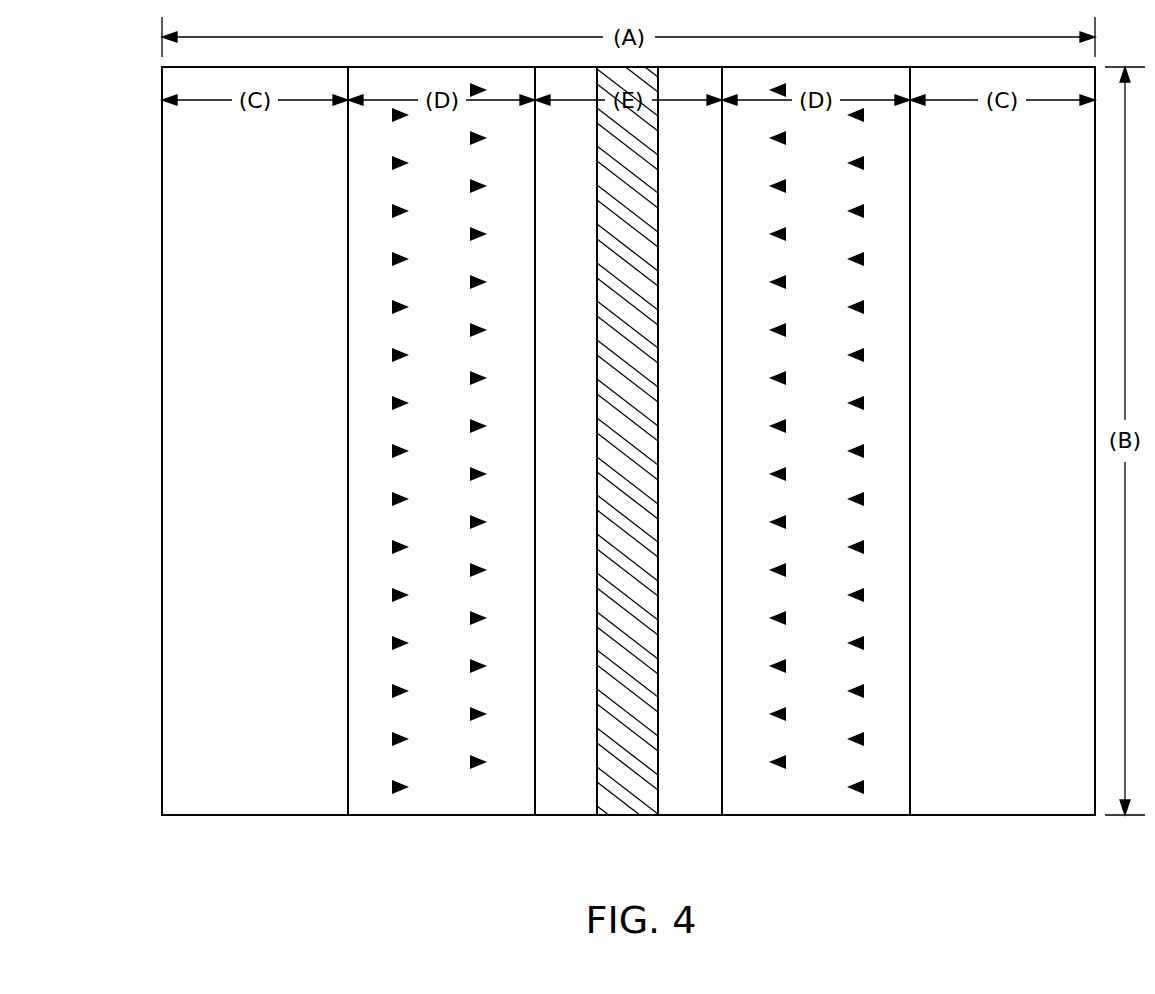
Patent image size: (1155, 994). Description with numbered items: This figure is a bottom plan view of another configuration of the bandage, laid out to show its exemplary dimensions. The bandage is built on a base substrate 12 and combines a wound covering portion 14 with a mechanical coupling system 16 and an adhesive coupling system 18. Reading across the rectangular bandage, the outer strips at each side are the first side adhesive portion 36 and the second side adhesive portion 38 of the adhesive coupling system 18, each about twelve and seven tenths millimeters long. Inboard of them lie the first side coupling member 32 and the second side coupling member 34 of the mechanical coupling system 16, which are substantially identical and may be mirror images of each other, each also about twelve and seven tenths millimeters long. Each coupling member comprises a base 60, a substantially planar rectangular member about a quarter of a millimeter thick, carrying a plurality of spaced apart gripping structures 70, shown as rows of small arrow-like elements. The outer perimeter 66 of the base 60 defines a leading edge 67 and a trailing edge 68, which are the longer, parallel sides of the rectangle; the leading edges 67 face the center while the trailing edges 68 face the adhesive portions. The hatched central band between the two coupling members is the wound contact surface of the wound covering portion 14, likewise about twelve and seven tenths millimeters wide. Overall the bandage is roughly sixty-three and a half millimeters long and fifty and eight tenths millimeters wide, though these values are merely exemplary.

The base substrate 12 is at (989, 775).
The wound covering portion 14 is at (620, 818).
The mechanical coupling system 16 is at (828, 818).
The adhesive coupling system 18 is at (1057, 775).
The first side coupling member 32 is at (441, 441).
The second side coupling member 34 is at (816, 441).
The first side adhesive portion 36 is at (255, 441).
The second side adhesive portion 38 is at (1002, 441).
The base 60 is at (401, 796).
The outer perimeter 66 is at (347, 315).
The leading edge 67 is at (535, 765).
The trailing edge 68 is at (348, 768).
The gripping structures 70 is at (479, 772).